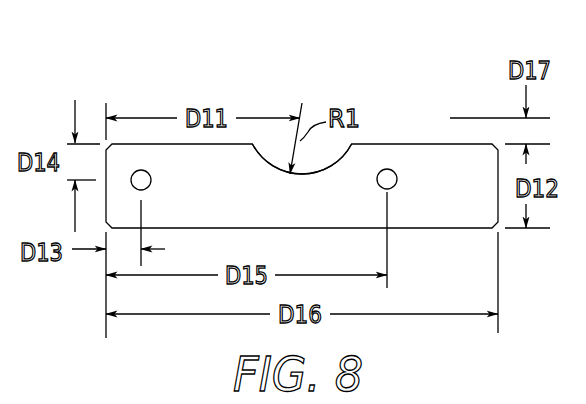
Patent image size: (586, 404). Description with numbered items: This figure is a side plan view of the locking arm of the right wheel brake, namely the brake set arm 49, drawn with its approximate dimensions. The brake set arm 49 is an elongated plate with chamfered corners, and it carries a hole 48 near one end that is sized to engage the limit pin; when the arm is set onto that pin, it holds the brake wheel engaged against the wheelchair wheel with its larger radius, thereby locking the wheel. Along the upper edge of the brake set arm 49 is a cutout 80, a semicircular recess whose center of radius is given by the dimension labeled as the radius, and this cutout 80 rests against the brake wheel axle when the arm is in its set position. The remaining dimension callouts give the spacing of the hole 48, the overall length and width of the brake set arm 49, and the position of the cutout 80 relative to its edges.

The hole 48 is at (385, 175).
The brake set arm 49 is at (472, 212).
The cutout 80 is at (262, 156).